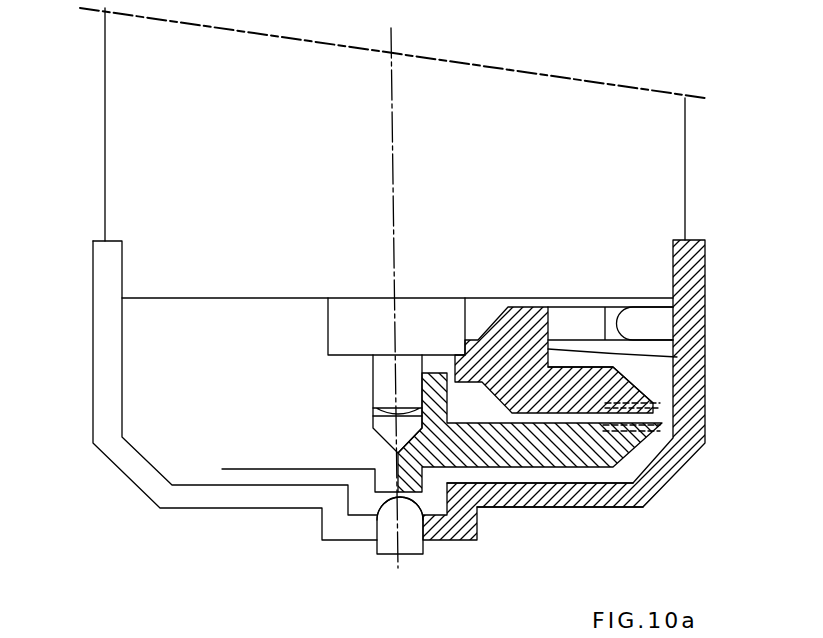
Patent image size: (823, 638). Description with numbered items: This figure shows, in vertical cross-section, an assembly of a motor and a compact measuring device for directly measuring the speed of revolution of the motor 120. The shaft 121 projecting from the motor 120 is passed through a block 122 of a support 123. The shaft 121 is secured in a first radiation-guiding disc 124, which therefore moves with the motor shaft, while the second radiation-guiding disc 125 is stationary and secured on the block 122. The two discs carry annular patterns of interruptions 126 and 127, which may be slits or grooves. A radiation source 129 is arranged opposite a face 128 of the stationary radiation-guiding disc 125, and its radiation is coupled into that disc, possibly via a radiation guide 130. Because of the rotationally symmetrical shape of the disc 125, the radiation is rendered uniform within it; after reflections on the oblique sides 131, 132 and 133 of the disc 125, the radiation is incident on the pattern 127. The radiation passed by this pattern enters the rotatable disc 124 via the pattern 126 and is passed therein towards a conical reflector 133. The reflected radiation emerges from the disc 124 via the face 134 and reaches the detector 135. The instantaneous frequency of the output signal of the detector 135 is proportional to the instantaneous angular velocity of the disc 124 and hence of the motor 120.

The motor 120 is at (660, 150).
The shaft 121 is at (383, 380).
The block 122 is at (343, 332).
The support 123 is at (103, 257).
The first radiation-guiding disc 124 is at (568, 450).
The second radiation-guiding disc 125 is at (607, 378).
The annular pattern of interruptions 126 is at (645, 440).
The annular pattern of interruptions 127 is at (652, 406).
The face 128 is at (683, 355).
The radiation source 129 is at (637, 318).
The radiation guide 130 is at (567, 317).
The oblique side 131 is at (495, 322).
The oblique side 132 is at (498, 388).
The oblique side / conical reflector 133 is at (388, 437).
The face 134 is at (393, 497).
The detector 135 is at (410, 548).